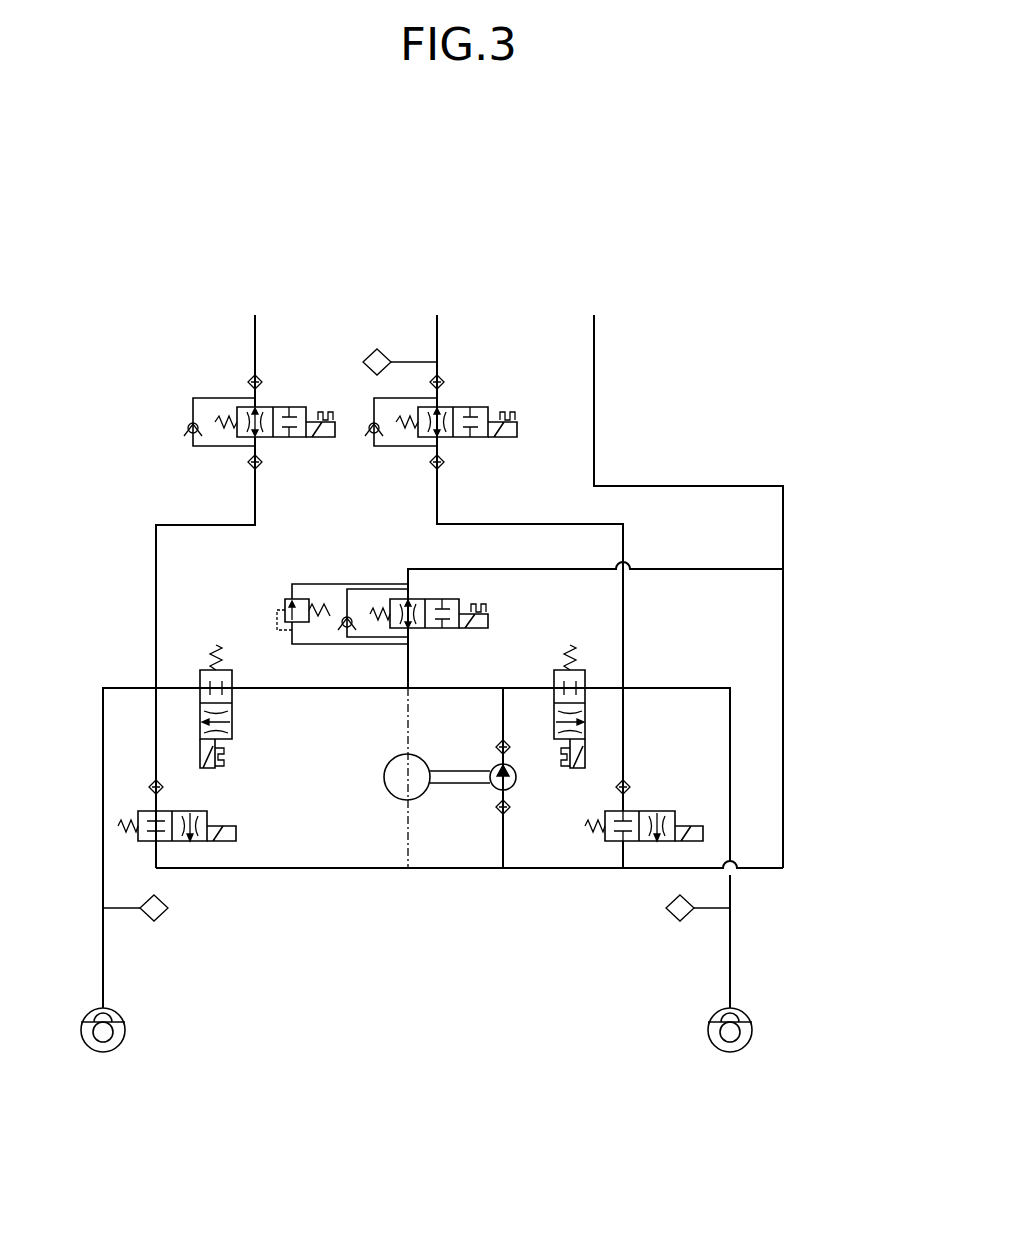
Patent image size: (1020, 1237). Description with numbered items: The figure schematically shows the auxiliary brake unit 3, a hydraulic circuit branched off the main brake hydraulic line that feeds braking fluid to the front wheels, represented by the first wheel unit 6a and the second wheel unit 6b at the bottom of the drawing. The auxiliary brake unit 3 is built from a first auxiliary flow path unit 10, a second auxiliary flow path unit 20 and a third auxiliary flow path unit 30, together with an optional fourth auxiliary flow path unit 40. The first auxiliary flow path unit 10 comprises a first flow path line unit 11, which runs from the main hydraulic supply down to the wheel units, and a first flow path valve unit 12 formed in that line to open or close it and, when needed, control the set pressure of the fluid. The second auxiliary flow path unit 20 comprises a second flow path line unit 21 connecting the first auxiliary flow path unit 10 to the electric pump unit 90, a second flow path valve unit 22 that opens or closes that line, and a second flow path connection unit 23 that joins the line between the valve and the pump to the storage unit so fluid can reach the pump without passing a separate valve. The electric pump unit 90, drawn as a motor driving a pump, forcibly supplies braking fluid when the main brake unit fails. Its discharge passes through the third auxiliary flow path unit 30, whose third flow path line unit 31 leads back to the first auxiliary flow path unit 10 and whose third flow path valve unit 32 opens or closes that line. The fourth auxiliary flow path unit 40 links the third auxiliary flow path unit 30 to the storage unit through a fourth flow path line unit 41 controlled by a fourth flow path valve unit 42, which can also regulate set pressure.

The auxiliary brake unit 3 is at (788, 222).
The first auxiliary flow path unit 10 is at (82, 480).
The first flow path line unit 11 is at (128, 688).
The first flow path valve unit 12 is at (293, 405).
The second auxiliary flow path unit 20 is at (668, 1003).
The second flow path line unit 21 is at (623, 755).
The second flow path valve unit 22 is at (612, 843).
The second flow path connection unit 23 is at (651, 870).
The third auxiliary flow path unit 30 is at (840, 700).
The third flow path line unit 31 is at (522, 688).
The third flow path valve unit 32 is at (585, 713).
The fourth auxiliary flow path unit 40 is at (742, 363).
The fourth flow path line unit 41 is at (543, 569).
The fourth flow path valve unit 42 is at (452, 599).
The electric pump unit 90 is at (425, 797).
The first wheel unit 6a is at (103, 1053).
The second wheel unit 6b is at (730, 1053).